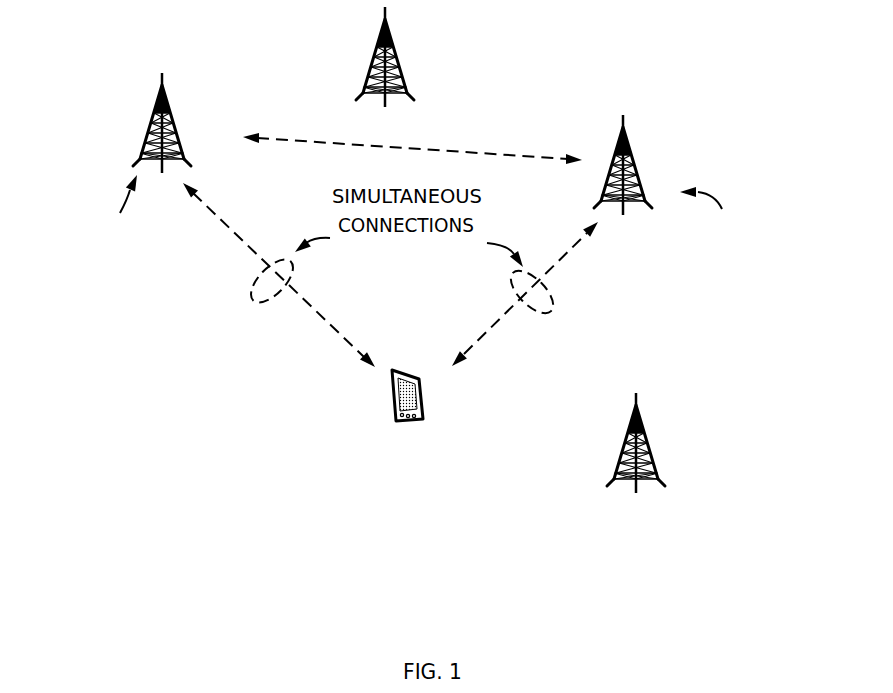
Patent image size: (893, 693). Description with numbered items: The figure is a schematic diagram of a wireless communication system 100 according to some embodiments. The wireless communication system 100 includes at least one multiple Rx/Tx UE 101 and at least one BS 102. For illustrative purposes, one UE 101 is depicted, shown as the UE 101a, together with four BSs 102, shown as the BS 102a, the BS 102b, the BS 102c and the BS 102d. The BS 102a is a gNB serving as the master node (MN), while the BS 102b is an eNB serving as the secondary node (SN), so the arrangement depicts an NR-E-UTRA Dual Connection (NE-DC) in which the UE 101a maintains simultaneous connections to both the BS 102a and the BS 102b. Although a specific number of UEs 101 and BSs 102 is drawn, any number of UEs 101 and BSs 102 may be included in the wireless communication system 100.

The wireless communication system 100 is at (576, 73).
The BS 102 is at (111, 97).
The BS 102a is at (171, 129).
The BS 102b is at (641, 181).
The BS 102c is at (412, 57).
The BS 102d is at (675, 443).
The multiple Rx/Tx UE 101 is at (376, 402).
The UE 101a is at (484, 396).